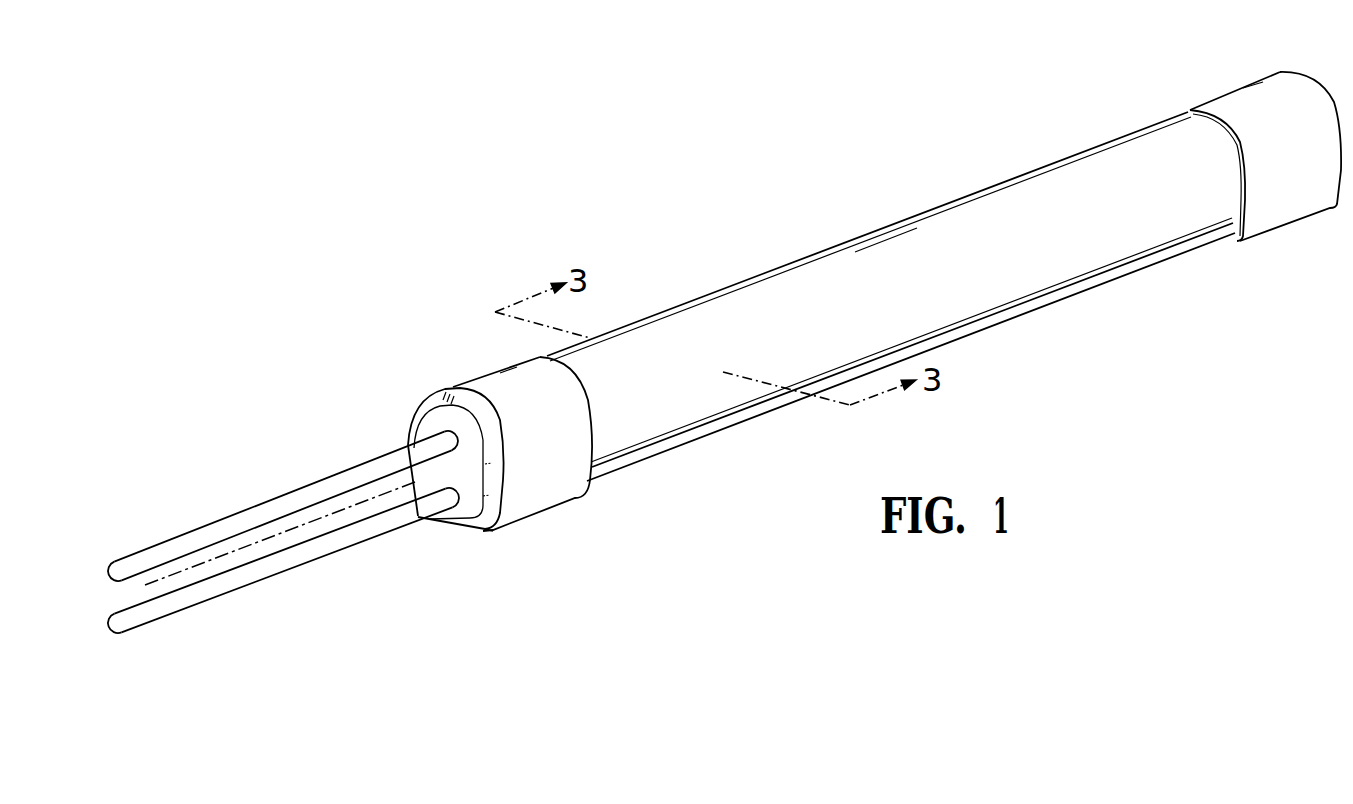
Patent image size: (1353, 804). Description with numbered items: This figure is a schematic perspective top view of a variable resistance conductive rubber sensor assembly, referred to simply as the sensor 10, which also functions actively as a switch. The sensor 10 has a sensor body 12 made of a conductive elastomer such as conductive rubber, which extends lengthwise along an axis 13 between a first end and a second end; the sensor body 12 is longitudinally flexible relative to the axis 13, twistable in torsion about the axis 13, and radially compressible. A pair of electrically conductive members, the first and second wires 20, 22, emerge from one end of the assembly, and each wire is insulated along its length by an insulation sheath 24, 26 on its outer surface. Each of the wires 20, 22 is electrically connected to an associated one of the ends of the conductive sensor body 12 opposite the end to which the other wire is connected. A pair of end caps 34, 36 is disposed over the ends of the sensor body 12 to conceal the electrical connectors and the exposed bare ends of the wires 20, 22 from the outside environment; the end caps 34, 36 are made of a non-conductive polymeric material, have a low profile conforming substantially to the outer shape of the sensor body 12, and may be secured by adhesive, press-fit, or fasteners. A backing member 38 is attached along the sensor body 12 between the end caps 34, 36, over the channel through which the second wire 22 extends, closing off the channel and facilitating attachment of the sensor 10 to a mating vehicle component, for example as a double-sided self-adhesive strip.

The sensor 10 is at (379, 294).
The sensor body 12 is at (1067, 183).
The axis 13 is at (187, 569).
The first wire 20 is at (147, 628).
The second wire 22 is at (132, 556).
The first insulation sheath 24 is at (248, 572).
The second insulation sheath 26 is at (268, 508).
The end cap 34 is at (1285, 202).
The end cap 36 is at (560, 482).
The backing member 38 is at (1002, 323).